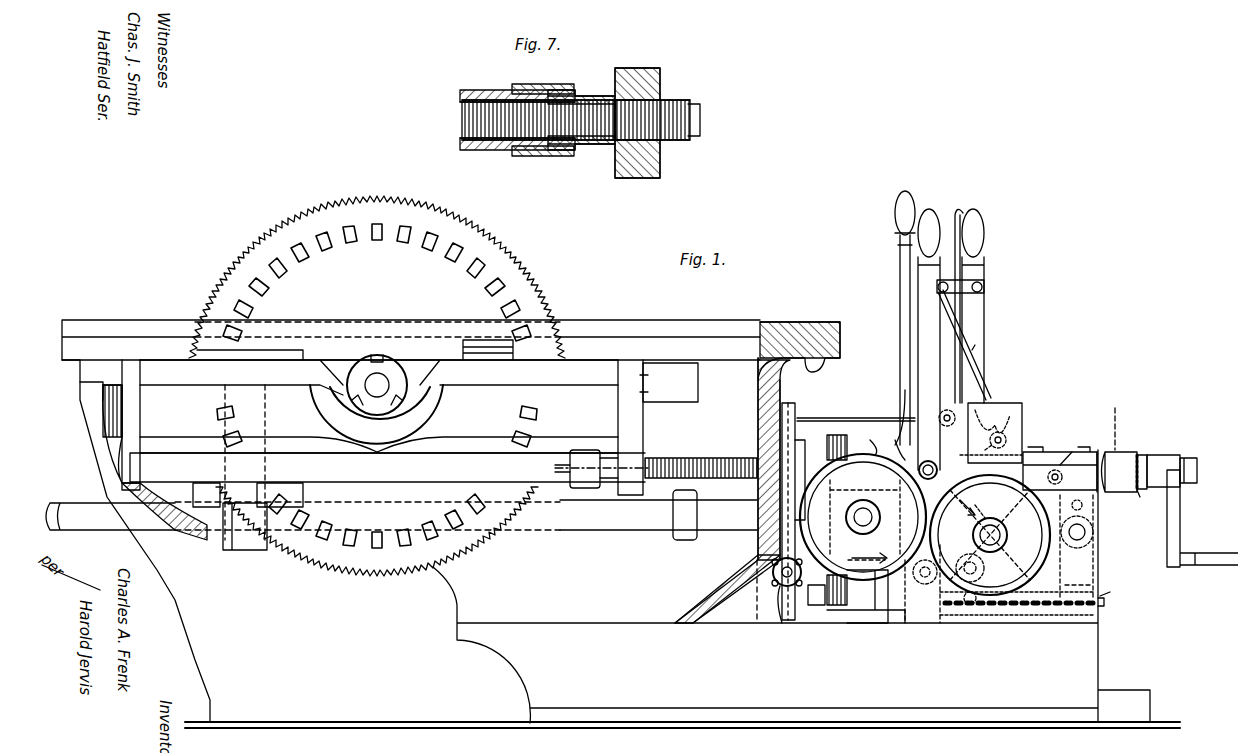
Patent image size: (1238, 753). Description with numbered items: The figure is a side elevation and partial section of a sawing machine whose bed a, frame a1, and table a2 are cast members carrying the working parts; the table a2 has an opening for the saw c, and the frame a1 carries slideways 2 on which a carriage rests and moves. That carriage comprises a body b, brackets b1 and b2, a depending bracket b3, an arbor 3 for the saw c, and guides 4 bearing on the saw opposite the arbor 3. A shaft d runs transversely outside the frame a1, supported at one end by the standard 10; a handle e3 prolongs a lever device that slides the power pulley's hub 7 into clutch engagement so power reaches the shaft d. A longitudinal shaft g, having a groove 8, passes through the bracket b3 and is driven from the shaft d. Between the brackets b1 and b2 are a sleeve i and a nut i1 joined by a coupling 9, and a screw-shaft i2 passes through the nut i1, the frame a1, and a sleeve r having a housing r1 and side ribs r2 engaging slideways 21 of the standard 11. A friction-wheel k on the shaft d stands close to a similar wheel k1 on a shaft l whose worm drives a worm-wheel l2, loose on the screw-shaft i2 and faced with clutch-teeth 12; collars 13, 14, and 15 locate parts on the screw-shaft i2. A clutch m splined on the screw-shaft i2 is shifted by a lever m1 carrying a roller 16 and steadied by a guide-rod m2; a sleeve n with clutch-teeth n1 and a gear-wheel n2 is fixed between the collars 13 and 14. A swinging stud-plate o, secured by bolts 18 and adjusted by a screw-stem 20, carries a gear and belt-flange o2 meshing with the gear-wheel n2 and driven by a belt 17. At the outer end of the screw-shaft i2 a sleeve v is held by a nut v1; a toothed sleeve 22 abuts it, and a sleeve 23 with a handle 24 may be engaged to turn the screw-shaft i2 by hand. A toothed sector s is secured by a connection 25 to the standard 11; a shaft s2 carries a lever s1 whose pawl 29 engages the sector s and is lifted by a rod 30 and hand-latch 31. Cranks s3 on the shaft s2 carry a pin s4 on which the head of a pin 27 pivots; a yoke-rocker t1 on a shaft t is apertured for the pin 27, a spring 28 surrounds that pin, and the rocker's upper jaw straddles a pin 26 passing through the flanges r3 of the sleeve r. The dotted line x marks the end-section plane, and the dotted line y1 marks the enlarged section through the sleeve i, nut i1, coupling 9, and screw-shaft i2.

In FIG. 1, the bed a is at (621, 544).
In FIG. 1, the frame a1 is at (758, 384).
In FIG. 1, the table a2 is at (695, 320).
In FIG. 1, the carriage body b is at (379, 450).
In FIG. 1, the bracket b1 is at (130, 417).
In FIG. 7, the bracket b2 is at (640, 178).
In FIG. 1, the bracket b2 is at (618, 410).
In FIG. 1, the depending bracket b3 is at (245, 550).
In FIG. 1, the saw c is at (424, 303).
In FIG. 1, the shaft d is at (864, 505).
In FIG. 1, the shaft g is at (643, 530).
In FIG. 7, the sleeve i is at (478, 95).
In FIG. 1, the sleeve i is at (387, 467).
In FIG. 7, the nut i1 is at (600, 95).
In FIG. 1, the nut i1 is at (612, 482).
In FIG. 7, the screw-shaft i2 is at (462, 122).
In FIG. 1, the screw-shaft i2 is at (705, 458).
In FIG. 1, the friction-wheel k is at (863, 517).
In FIG. 1, the friction-wheel k1 is at (990, 535).
In FIG. 1, the shaft l is at (995, 545).
In FIG. 1, the worm-wheel l2 is at (1005, 420).
In FIG. 1, the clutch m is at (891, 439).
In FIG. 1, the lever m1 is at (950, 383).
In FIG. 1, the guide-rod m2 is at (868, 420).
In FIG. 1, the sleeve n is at (867, 440).
In FIG. 1, the clutch-teeth n1 is at (892, 408).
In FIG. 1, the gear-wheel n2 is at (835, 418).
In FIG. 1, the stud-plate o is at (788, 412).
In FIG. 1, the gear and belt-flange o2 is at (832, 602).
In FIG. 1, the handle e3 is at (900, 350).
In FIG. 1, the sleeve r is at (1070, 452).
In FIG. 1, the housing r1 is at (1000, 403).
In FIG. 1, the side ribs r2 is at (1100, 452).
In FIG. 1, the flanges r3 is at (1087, 522).
In FIG. 1, the toothed sector s is at (1015, 455).
In FIG. 1, the lever s1 is at (975, 325).
In FIG. 1, the shaft s2 is at (962, 580).
In FIG. 1, the cranks s3 is at (965, 600).
In FIG. 1, the pin s4 is at (970, 605).
In FIG. 1, the shaft t is at (1088, 540).
In FIG. 1, the yoke-rocker t1 is at (1085, 580).
In FIG. 1, the sleeve v is at (1143, 503).
In FIG. 1, the nut v1 is at (1188, 458).
In FIG. 1, the dotted section line x is at (1115, 465).
In FIG. 1, the dotted section line y1 is at (663, 458).
In FIG. 1, the slideways 2 is at (85, 392).
In FIG. 1, the arbor 3 is at (380, 383).
In FIG. 1, the guides 4 is at (290, 355).
In FIG. 1, the hub 7 is at (699, 515).
In FIG. 1, the longitudinal groove 8 is at (95, 522).
In FIG. 7, the coupling 9 is at (542, 158).
In FIG. 1, the coupling 9 is at (583, 488).
In FIG. 1, the standard 10 is at (866, 596).
In FIG. 1, the standard 11 is at (1095, 575).
In FIG. 1, the clutch-teeth 12 is at (949, 420).
In FIG. 1, the collar 13 is at (828, 448).
In FIG. 1, the collar 14 is at (873, 518).
In FIG. 1, the collar 15 is at (992, 503).
In FIG. 1, the roller 16 is at (928, 461).
In FIG. 1, the belt 17 is at (813, 598).
In FIG. 1, the bolts 18 is at (791, 476).
In FIG. 1, the screw-stem 20 is at (775, 580).
In FIG. 1, the slideways 21 is at (1062, 462).
In FIG. 1, the sleeve 22 is at (1125, 452).
In FIG. 1, the sleeve 23 is at (1163, 455).
In FIG. 1, the handle 24 is at (1202, 518).
In FIG. 1, the connection 25 is at (1068, 474).
In FIG. 1, the pin 26 is at (1083, 505).
In FIG. 1, the pin 27 is at (1104, 602).
In FIG. 1, the spring 28 is at (1010, 615).
In FIG. 1, the pawl 29 is at (1005, 445).
In FIG. 1, the rod 30 is at (972, 350).
In FIG. 1, the hand-latch 31 is at (958, 215).